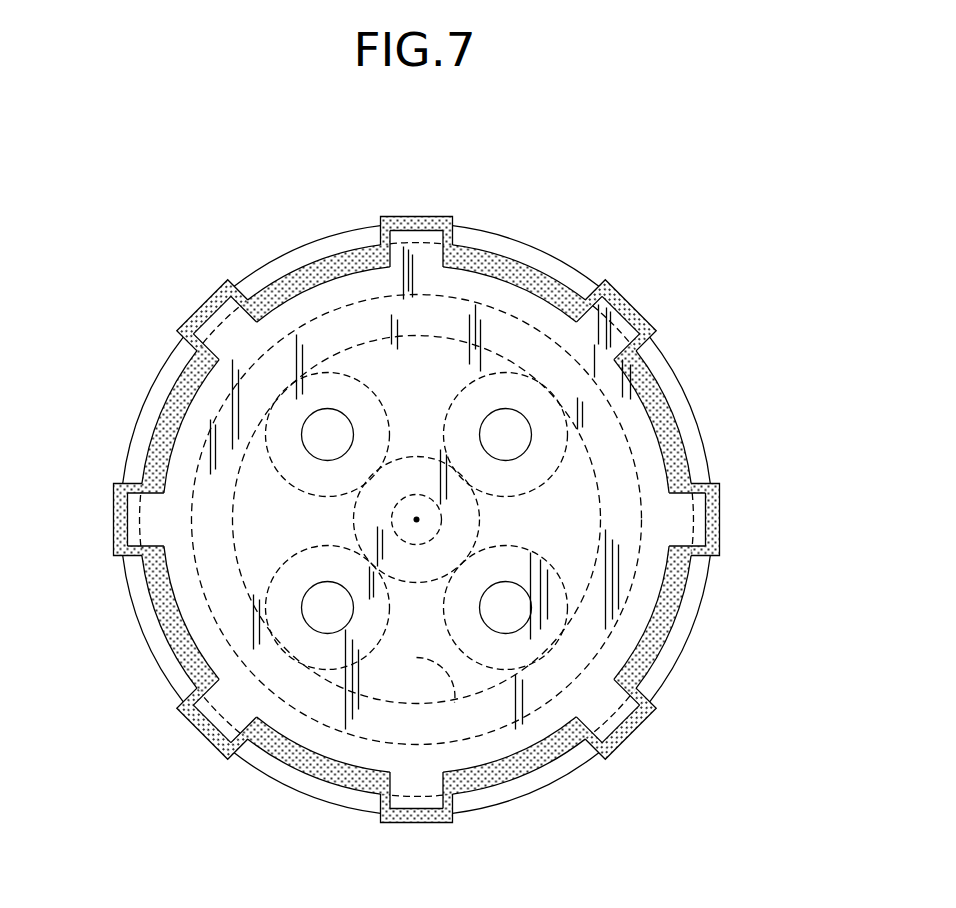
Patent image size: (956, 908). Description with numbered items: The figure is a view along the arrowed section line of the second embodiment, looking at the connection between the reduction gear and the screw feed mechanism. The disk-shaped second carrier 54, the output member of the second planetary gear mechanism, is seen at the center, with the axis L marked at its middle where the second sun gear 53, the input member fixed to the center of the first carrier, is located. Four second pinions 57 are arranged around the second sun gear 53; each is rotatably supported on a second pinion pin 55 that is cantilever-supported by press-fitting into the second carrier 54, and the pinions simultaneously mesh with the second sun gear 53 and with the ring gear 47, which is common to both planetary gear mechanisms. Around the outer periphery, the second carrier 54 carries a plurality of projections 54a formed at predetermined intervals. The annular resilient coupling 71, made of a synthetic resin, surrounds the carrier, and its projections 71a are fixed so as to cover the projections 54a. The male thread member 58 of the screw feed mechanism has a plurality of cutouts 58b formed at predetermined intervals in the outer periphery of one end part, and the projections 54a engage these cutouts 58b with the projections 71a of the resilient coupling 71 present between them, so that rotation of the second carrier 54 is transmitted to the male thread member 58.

The ring gear 47 is at (427, 662).
The second sun gear 53 is at (350, 535).
The second carrier 54 is at (322, 764).
The projections 54a is at (426, 236).
The second pinion pins 55 is at (327, 437).
The second pinions 57 is at (366, 382).
The male thread member 58 is at (505, 236).
The cutouts 58b is at (396, 228).
The resilient coupling 71 is at (551, 266).
The projections 71a is at (200, 305).
The axis L is at (416, 520).